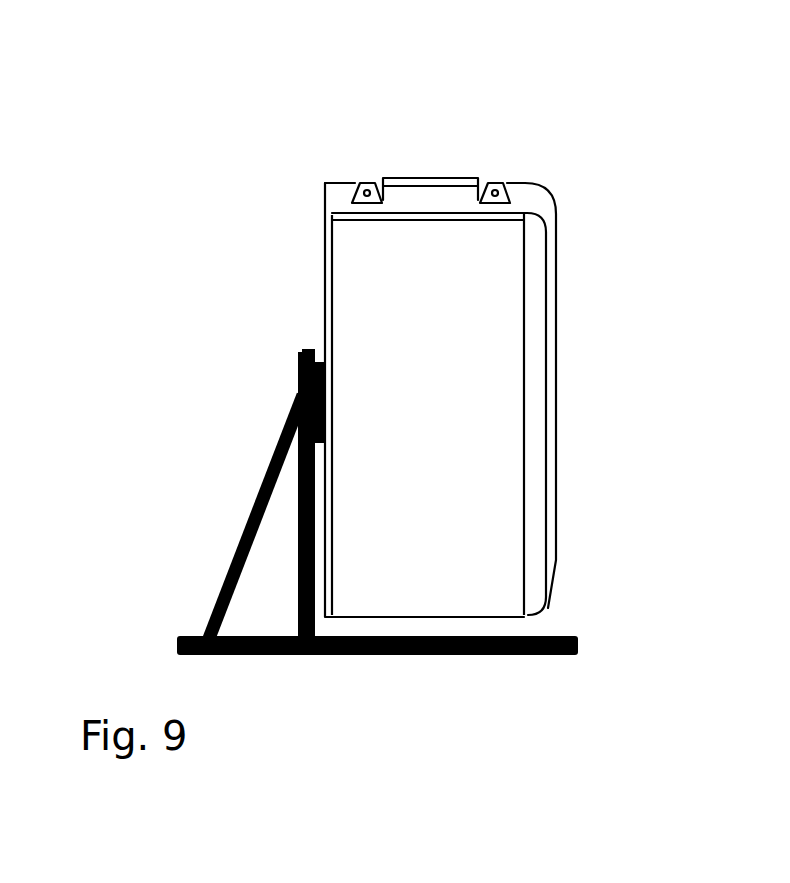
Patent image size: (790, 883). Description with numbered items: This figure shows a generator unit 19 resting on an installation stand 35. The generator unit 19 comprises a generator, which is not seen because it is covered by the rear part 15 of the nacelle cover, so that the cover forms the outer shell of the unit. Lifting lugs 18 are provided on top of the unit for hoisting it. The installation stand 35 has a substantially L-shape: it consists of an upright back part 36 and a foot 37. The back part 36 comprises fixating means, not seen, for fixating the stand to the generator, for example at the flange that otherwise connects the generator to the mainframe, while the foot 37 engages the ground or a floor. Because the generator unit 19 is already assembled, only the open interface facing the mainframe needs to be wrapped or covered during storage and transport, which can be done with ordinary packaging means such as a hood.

The second/rear part of the nacelle cover 15 is at (503, 330).
The lifting lug 18 is at (367, 188).
The generator unit 19 is at (423, 427).
The installation stand 35 is at (133, 487).
The back on installation stand 36 is at (297, 490).
The foot on installation stand 37 is at (408, 655).